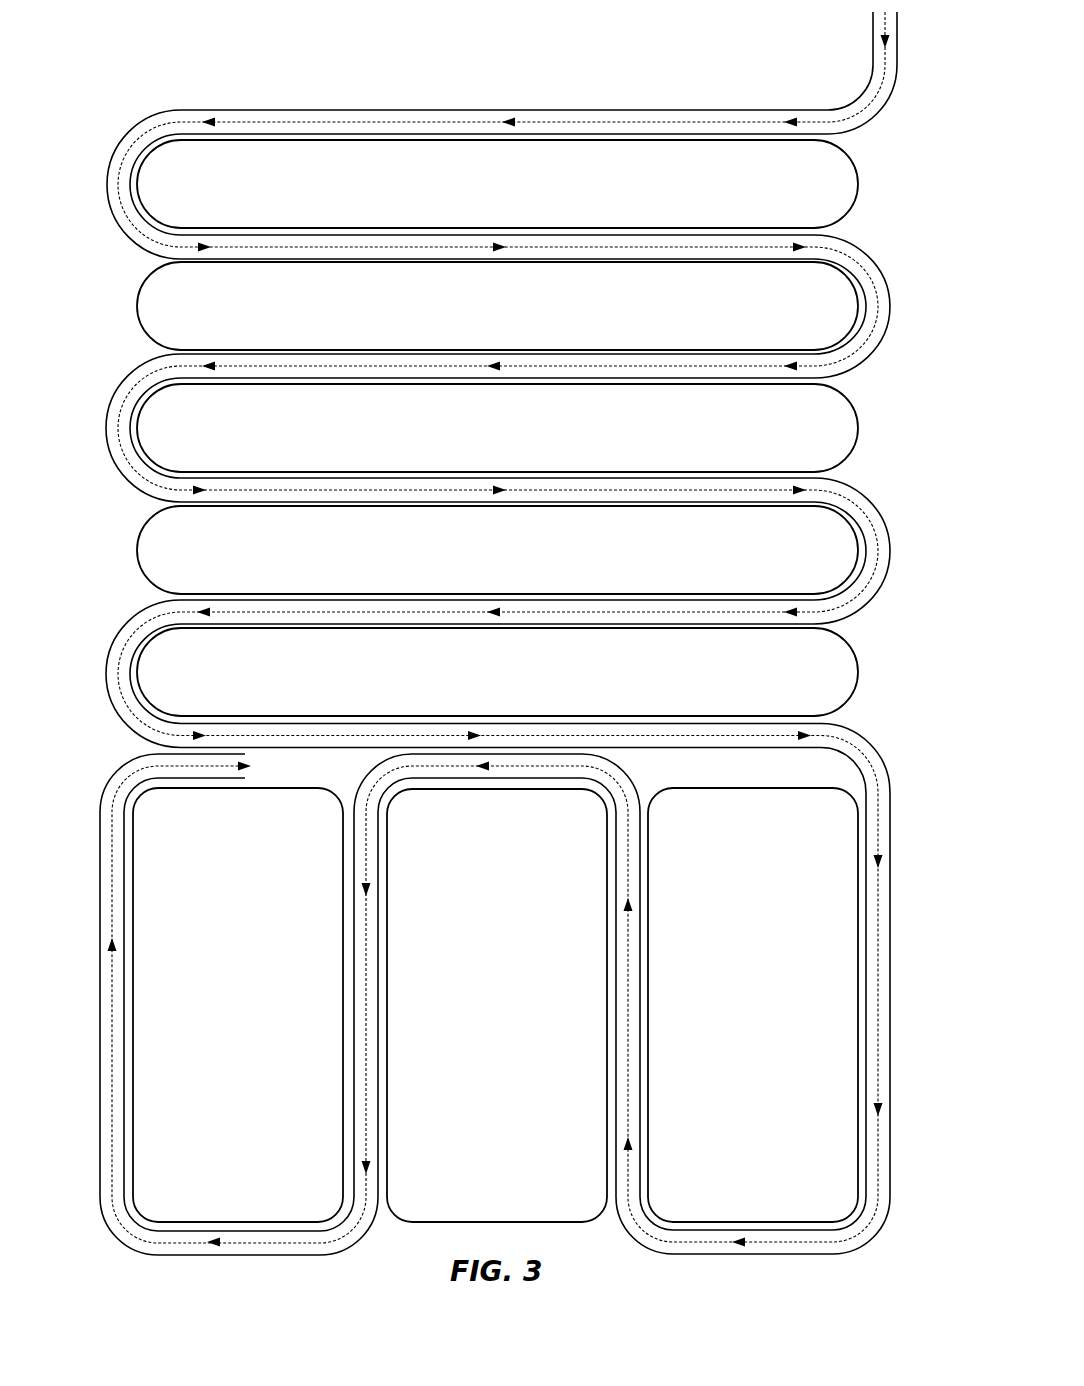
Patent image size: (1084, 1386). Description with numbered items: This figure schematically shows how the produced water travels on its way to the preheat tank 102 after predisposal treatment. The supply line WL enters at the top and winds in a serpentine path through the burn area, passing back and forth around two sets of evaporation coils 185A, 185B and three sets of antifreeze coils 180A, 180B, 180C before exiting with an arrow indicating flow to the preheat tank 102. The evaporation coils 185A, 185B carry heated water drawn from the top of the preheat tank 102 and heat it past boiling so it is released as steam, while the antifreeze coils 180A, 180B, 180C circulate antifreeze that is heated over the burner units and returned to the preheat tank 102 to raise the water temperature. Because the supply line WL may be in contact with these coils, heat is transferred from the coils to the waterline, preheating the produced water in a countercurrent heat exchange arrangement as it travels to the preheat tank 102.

The supply line WL is at (142, 133).
The evaporation coils 185A is at (783, 194).
The evaporation coils 185B is at (783, 317).
The antifreeze coils 180A is at (783, 438).
The antifreeze coils 180B is at (783, 559).
The antifreeze coils 180C is at (783, 683).
The preheat water tank 102 is at (291, 767).